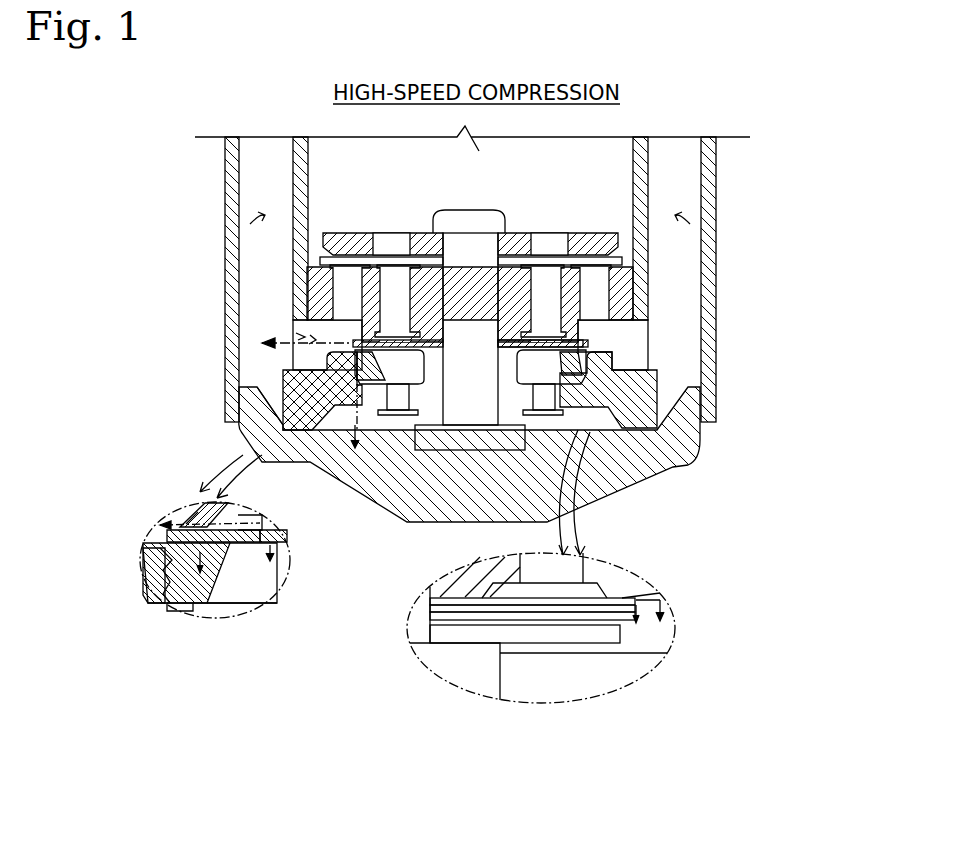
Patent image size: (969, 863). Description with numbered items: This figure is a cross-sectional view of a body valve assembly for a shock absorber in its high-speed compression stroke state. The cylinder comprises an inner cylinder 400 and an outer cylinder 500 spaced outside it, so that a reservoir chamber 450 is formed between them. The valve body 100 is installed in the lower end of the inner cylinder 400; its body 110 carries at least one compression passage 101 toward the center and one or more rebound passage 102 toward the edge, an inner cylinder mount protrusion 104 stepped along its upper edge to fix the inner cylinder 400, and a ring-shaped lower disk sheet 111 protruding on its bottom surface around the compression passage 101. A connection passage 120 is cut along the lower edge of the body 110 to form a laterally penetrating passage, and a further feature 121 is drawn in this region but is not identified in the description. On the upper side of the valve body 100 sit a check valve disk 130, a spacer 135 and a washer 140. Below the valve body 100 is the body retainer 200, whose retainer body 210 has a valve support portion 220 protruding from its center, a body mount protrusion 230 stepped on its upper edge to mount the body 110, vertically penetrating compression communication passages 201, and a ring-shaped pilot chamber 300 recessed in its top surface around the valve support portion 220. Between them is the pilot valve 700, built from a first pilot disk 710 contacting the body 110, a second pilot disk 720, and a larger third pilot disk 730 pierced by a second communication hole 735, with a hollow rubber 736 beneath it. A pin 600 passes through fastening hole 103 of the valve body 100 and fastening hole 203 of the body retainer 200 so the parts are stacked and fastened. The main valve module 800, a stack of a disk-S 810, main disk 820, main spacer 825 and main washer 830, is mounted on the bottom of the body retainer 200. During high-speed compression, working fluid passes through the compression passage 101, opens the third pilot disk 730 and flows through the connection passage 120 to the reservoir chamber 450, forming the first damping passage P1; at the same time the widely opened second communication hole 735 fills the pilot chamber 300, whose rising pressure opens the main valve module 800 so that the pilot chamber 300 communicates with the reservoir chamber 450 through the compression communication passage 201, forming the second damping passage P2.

The valve body 100 is at (453, 312).
The compression passage 101 is at (398, 282).
The rebound passage 102 is at (354, 282).
The fastening hole 103 is at (445, 290).
The inner cylinder mount protrusion 104 is at (330, 300).
The body 110 is at (633, 290).
The lower disk sheet 111 is at (190, 526).
The connection passage 120 is at (300, 334).
The flow path 121 is at (238, 341).
The check valve disk 130 is at (320, 261).
The spacer 135 is at (430, 262).
The washer 140 is at (323, 240).
The body retainer 200 is at (348, 472).
The compression communication passage 201 is at (335, 433).
The fastening hole 203 is at (446, 358).
The retainer body 210 is at (300, 394).
The valve support portion 220 is at (328, 354).
The body mount protrusion 230 is at (355, 368).
The pilot chamber 300 is at (310, 465).
The inner cylinder 400 is at (295, 198).
The reservoir chamber 450 is at (240, 223).
The outer cylinder 500 is at (226, 203).
The pin 600 is at (469, 210).
The pilot valve 700 is at (449, 488).
The first pilot disk 710 is at (585, 345).
The second pilot disk 720 is at (660, 405).
The third pilot disk 730 is at (650, 390).
The second communication hole 735 is at (580, 364).
The rubber 736 is at (170, 608).
The main valve module 800 is at (545, 593).
The disk-S 810 is at (628, 606).
The main disk 820 is at (625, 613).
The main spacer 825 is at (548, 620).
The main washer 830 is at (525, 676).
The first damping passage P1 is at (243, 432).
The second damping passage P2 is at (466, 535).